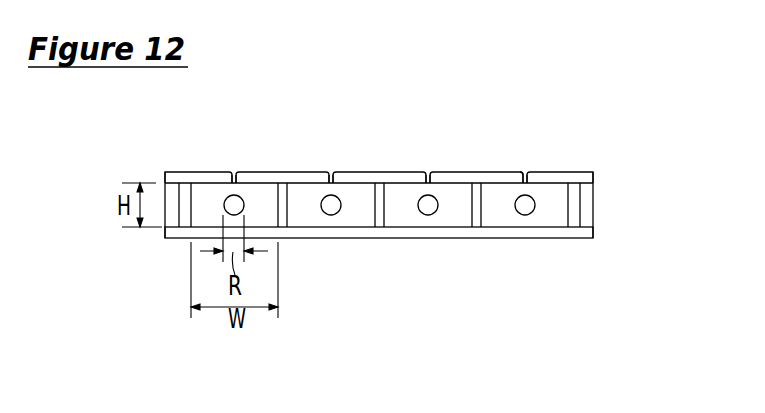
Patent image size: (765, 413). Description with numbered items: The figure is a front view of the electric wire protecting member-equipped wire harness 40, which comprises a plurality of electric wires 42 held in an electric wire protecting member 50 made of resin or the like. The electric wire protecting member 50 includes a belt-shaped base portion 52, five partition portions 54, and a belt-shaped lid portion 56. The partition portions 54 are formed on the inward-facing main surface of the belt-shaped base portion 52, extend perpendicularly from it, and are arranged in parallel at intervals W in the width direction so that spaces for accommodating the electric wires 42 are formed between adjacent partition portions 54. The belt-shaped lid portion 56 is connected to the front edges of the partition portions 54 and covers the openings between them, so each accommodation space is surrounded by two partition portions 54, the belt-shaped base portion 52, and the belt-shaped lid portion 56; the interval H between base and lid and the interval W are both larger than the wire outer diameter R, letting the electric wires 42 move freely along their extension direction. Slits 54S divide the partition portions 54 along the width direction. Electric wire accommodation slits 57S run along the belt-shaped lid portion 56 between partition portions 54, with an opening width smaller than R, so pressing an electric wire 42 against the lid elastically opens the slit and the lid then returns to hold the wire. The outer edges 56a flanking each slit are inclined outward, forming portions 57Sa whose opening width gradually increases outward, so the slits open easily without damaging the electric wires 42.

The electric wire protecting member-equipped wire harness 40 is at (435, 157).
The electric wire 42 is at (333, 210).
The electric wire protecting member 50 is at (594, 234).
The belt-shaped base portion 52 is at (586, 239).
The partition portion 54 is at (181, 200).
The slit 54S is at (234, 172).
The belt-shaped lid portion 56 is at (493, 172).
The outer edge 56a is at (523, 172).
The electric wire accommodation slit 57S is at (331, 172).
The portion whose opening width gradually increases outward 57Sa is at (428, 172).